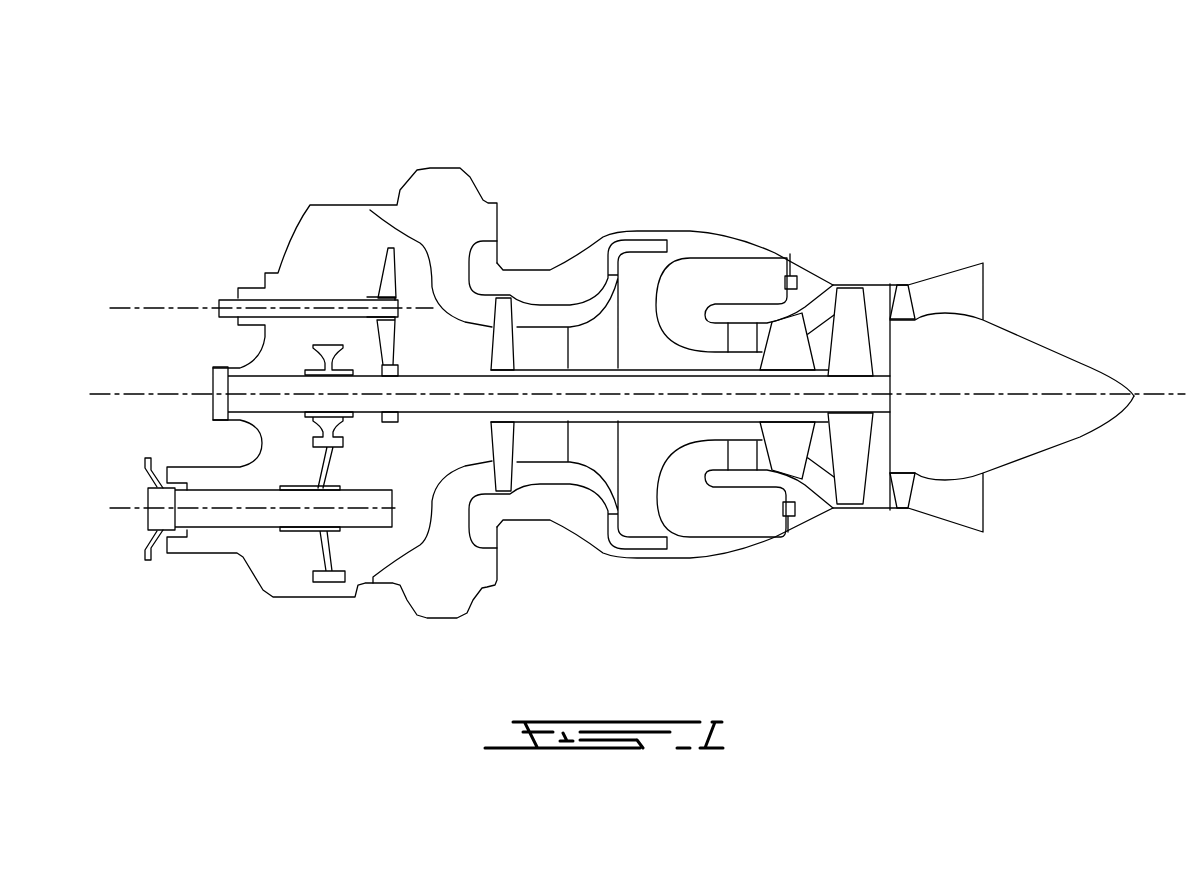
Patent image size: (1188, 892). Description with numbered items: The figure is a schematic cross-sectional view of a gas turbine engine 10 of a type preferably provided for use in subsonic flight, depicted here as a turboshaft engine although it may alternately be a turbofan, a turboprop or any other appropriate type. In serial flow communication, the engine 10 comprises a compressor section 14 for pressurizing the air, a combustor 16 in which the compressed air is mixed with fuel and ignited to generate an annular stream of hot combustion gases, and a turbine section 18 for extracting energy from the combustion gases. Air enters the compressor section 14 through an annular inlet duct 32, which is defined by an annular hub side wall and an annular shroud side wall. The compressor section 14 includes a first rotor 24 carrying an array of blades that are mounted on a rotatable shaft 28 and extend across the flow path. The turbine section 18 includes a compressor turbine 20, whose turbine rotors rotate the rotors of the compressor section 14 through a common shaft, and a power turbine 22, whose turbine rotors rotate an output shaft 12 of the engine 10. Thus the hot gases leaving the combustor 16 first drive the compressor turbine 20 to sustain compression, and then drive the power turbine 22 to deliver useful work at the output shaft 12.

The gas turbine engine 10 is at (934, 147).
The output shaft 12 is at (215, 518).
The compressor section 14 is at (542, 326).
The combustor 16 is at (742, 277).
The turbine section 18 is at (821, 464).
The compressor turbine 20 is at (782, 457).
The power turbine 22 is at (843, 300).
The first rotor 24 is at (502, 312).
The rotatable shaft 28 is at (543, 422).
The annular inlet duct 32 is at (437, 260).